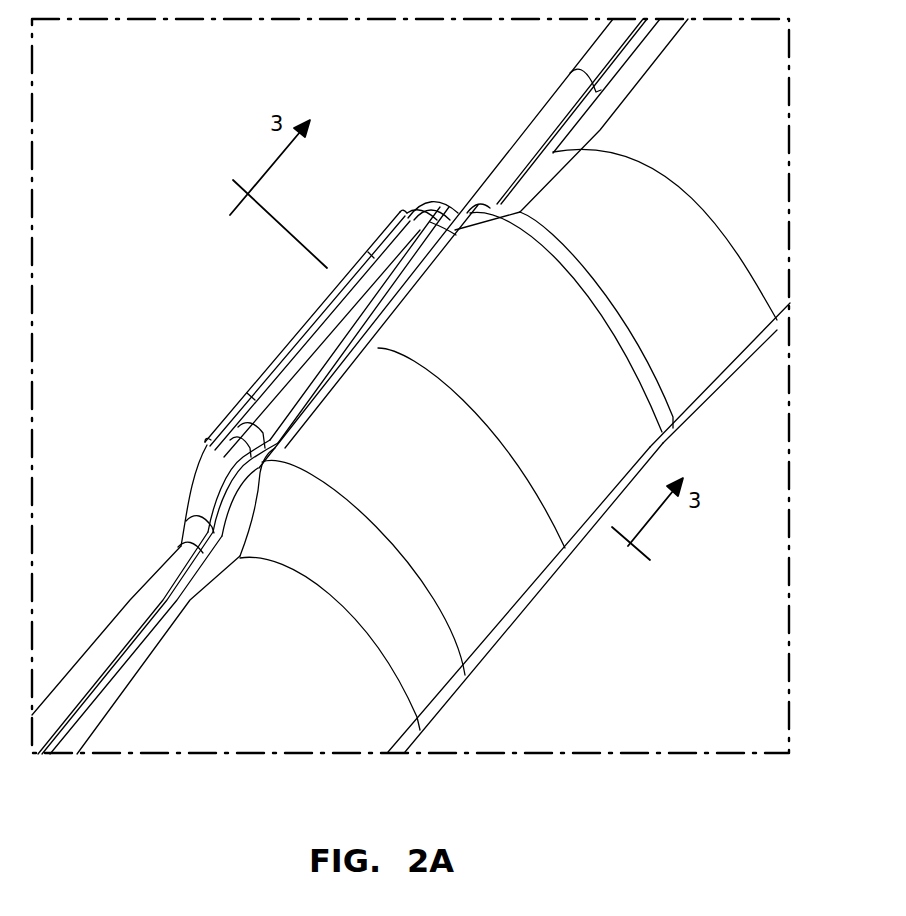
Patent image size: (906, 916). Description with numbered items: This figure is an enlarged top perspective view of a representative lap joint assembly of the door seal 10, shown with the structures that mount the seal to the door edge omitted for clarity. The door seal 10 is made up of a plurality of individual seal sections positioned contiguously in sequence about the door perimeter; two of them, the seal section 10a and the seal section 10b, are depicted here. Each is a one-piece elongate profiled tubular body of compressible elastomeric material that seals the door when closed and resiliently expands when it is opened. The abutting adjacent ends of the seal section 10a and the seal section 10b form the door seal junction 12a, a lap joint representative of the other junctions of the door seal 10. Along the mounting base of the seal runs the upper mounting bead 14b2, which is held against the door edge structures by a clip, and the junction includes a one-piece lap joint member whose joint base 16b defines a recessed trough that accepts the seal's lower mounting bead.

The door seal 10 is at (492, 124).
The seal section 10a is at (568, 393).
The seal section 10b is at (474, 495).
The door seal junction 12a is at (191, 408).
The upper mounting bead 14b2 is at (410, 240).
The joint base 16b is at (388, 226).